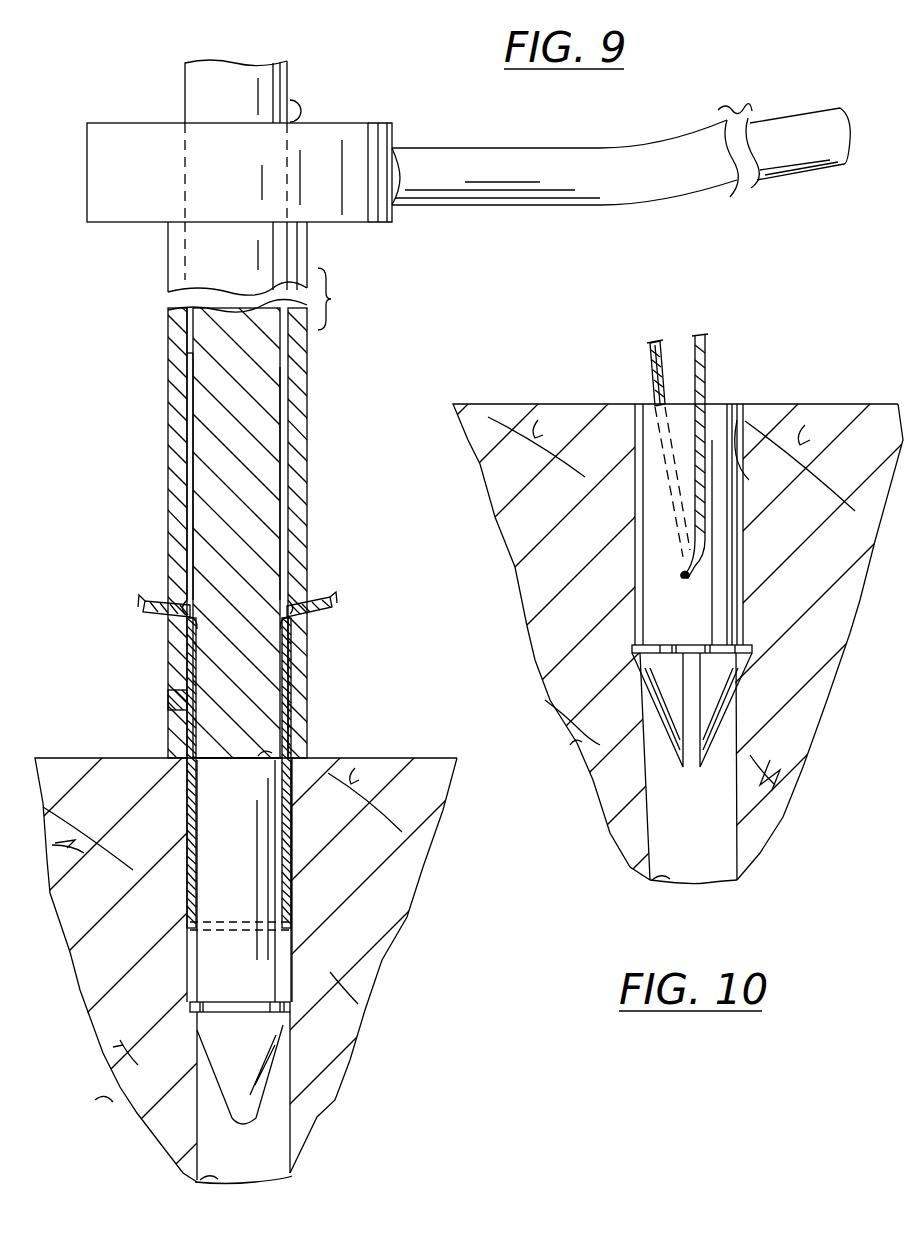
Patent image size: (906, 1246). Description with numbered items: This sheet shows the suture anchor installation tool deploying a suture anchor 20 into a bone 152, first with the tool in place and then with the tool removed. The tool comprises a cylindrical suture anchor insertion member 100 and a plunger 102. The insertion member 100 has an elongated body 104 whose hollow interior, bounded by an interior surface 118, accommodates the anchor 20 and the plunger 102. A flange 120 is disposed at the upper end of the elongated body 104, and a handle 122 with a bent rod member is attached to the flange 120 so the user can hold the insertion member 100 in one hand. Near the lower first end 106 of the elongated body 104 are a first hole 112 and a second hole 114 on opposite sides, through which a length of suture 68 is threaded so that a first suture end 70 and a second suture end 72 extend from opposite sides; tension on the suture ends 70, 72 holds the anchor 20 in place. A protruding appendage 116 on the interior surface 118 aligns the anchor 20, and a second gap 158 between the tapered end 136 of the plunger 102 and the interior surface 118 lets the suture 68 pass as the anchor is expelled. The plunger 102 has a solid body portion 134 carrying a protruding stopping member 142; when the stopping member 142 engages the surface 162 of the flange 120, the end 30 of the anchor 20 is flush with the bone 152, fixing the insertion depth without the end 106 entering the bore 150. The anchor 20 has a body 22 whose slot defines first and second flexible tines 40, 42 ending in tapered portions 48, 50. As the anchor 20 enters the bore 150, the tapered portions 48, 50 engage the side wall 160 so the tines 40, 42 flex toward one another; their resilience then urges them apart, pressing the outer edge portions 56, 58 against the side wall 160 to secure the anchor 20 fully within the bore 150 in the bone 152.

In FIG. 9, the suture anchor 20 is at (245, 866).
In FIG. 10, the suture anchor 20 is at (718, 419).
In FIG. 10, the body 22 is at (790, 470).
In FIG. 9, the end of the suture anchor 30 is at (269, 755).
In FIG. 10, the first flexible tine 40 is at (643, 600).
In FIG. 10, the second flexible tine 42 is at (743, 608).
In FIG. 10, the tapered portion 48 is at (655, 674).
In FIG. 10, the tapered portion 50 is at (724, 670).
In FIG. 10, the outer edge portion 56 is at (632, 648).
In FIG. 10, the outer edge portion 58 is at (752, 645).
In FIG. 9, the suture 68 is at (320, 608).
In FIG. 10, the suture 68 is at (645, 368).
In FIG. 9, the first suture end 70 is at (154, 616).
In FIG. 10, the first suture end 70 is at (651, 341).
In FIG. 9, the second suture end 72 is at (336, 598).
In FIG. 10, the second suture end 72 is at (690, 340).
In FIG. 9, the suture anchor insertion member 100 is at (142, 260).
In FIG. 9, the plunger 102 is at (266, 80).
In FIG. 9, the elongated body 104 is at (303, 455).
In FIG. 9, the first end 106 is at (299, 733).
In FIG. 9, the first hole 112 is at (184, 604).
In FIG. 9, the second hole 114 is at (302, 603).
In FIG. 9, the protruding appendage 116 is at (168, 700).
In FIG. 9, the interior surface 118 is at (185, 527).
In FIG. 9, the flange 120 is at (125, 158).
In FIG. 9, the handle 122 is at (633, 194).
In FIG. 9, the solid body portion 134 is at (198, 90).
In FIG. 9, the tapered end 136 is at (218, 440).
In FIG. 9, the protruding stopping member 142 is at (302, 105).
In FIG. 9, the bore 150 is at (268, 1160).
In FIG. 10, the bore 150 is at (715, 816).
In FIG. 9, the bone 152 is at (333, 1022).
In FIG. 10, the bone 152 is at (530, 525).
In FIG. 9, the second gap 158 is at (190, 479).
In FIG. 9, the side wall of the bore 160 is at (218, 1183).
In FIG. 10, the side wall of the bore 160 is at (650, 890).
In FIG. 9, the surface of the flange 162 is at (380, 124).